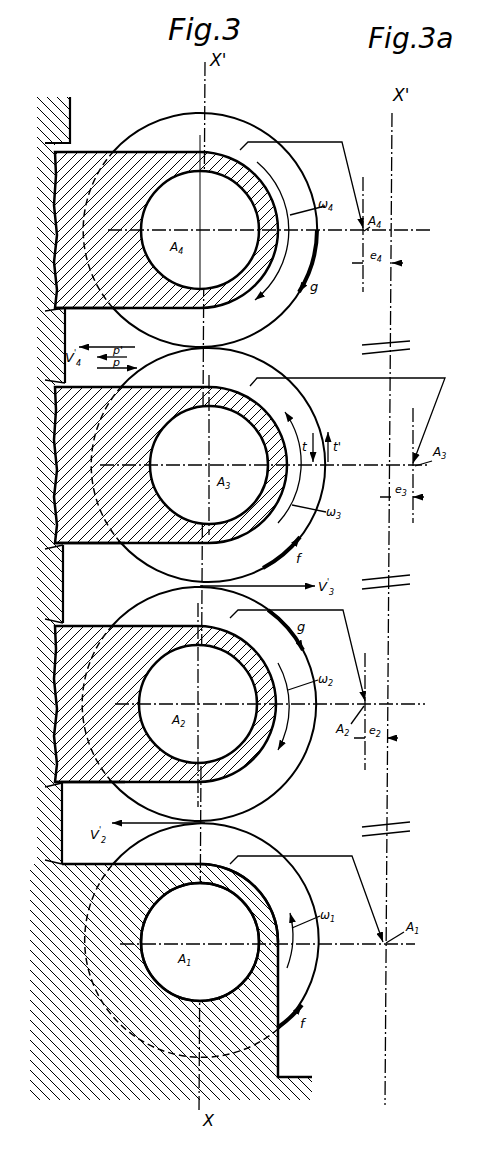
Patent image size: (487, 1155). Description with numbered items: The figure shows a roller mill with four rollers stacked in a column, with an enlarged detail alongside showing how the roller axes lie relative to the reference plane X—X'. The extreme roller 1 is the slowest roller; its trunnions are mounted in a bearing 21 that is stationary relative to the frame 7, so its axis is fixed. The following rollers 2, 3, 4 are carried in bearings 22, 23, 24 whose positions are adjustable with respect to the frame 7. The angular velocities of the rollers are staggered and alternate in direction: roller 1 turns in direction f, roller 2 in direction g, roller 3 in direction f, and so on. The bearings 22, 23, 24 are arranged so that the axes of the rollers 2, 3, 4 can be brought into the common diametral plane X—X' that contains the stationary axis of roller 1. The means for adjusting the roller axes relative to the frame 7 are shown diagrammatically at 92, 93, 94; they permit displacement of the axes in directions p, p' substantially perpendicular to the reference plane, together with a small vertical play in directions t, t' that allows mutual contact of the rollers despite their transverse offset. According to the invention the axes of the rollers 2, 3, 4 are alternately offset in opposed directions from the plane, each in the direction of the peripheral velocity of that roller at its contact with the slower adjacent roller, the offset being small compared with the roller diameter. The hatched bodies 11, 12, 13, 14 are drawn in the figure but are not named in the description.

The extreme roller 1 is at (306, 889).
The roller 2 is at (297, 768).
The roller 3 is at (300, 413).
The roller 4 is at (276, 318).
The frame 7 is at (50, 593).
The first roller 11 is at (202, 940).
The second roller 12 is at (215, 747).
The third roller 13 is at (211, 463).
The fourth roller 14 is at (202, 228).
The bearing 21 is at (258, 982).
The bearing 22 is at (167, 635).
The bearing 23 is at (173, 527).
The bearing 24 is at (172, 135).
The adjusting means 92 is at (75, 763).
The adjusting means 93 is at (82, 523).
The adjusting means 94 is at (83, 293).